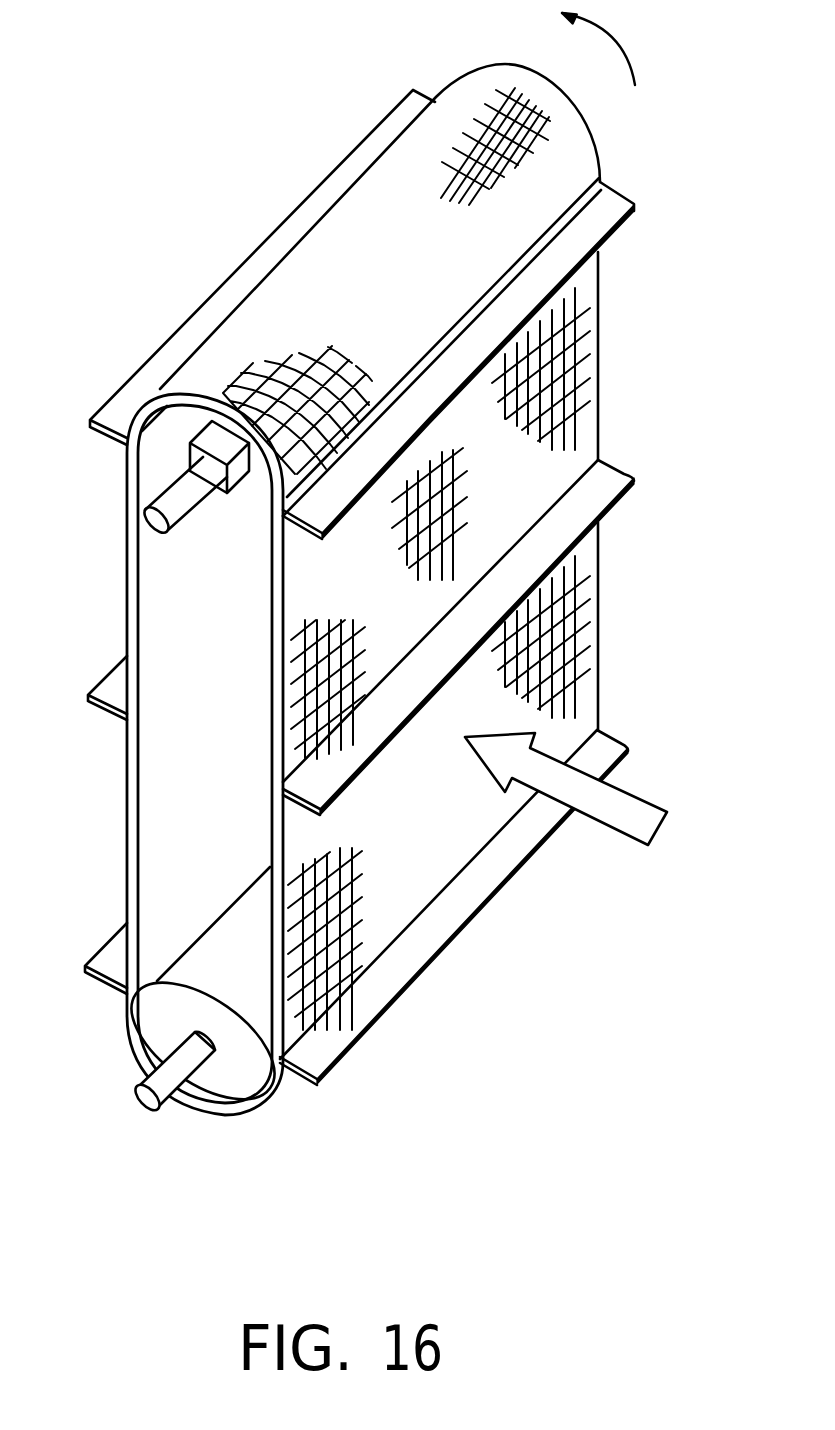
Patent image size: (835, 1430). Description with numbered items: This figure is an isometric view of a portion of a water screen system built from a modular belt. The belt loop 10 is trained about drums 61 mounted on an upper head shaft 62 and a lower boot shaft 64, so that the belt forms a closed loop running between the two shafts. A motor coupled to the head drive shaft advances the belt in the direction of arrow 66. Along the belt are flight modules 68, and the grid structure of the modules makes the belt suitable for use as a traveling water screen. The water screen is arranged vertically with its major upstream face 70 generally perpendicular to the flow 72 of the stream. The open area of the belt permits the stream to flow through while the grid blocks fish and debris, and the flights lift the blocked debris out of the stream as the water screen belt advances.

The belt loop 10 is at (577, 139).
The drums 61 is at (247, 1085).
The upper head shaft 62 is at (168, 498).
The lower boot shaft 64 is at (173, 1088).
The arrow 66 is at (613, 33).
The flight modules 68 is at (620, 474).
The major upstream face 70 is at (600, 366).
The flow 72 is at (622, 803).